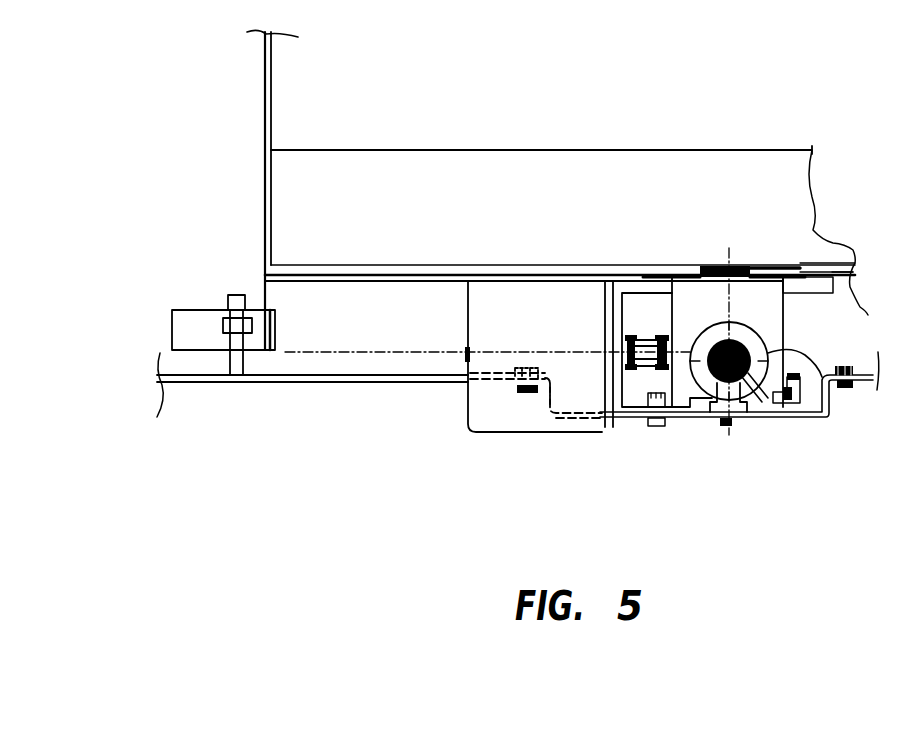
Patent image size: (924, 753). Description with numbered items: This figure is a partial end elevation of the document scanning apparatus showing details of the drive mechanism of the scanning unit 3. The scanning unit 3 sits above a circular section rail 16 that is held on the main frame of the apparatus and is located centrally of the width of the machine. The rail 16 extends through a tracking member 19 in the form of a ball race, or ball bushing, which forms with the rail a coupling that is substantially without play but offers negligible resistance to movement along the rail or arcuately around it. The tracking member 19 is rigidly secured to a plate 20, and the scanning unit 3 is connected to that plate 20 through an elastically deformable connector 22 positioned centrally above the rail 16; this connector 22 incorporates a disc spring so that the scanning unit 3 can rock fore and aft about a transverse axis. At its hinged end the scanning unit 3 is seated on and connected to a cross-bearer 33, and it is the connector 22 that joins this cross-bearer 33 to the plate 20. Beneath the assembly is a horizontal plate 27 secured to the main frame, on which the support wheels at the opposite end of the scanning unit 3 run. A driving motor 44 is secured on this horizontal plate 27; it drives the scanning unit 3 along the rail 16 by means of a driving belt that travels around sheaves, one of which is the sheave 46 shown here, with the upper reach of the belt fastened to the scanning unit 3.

The scanning unit 3 is at (265, 113).
The circular section rail 16 is at (758, 412).
The tracking member 19 is at (833, 392).
The plate 20 is at (728, 312).
The elastically deformable connector 22 is at (825, 232).
The horizontal plate 27 is at (210, 382).
The cross-bearer 33 is at (810, 261).
The driving motor 44 is at (510, 415).
The sheave 46 is at (647, 335).